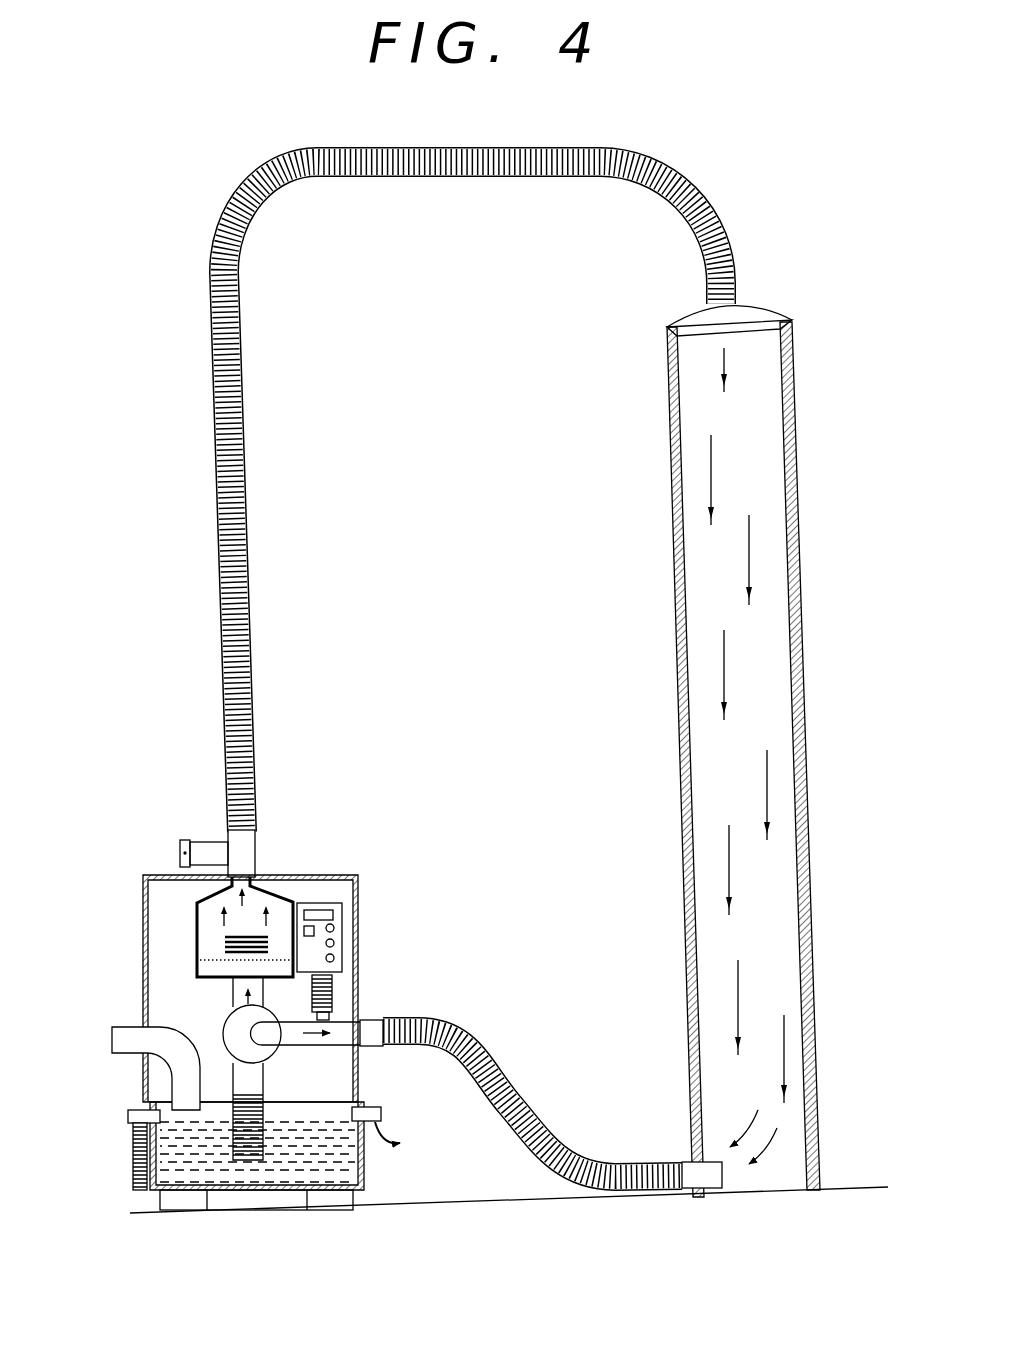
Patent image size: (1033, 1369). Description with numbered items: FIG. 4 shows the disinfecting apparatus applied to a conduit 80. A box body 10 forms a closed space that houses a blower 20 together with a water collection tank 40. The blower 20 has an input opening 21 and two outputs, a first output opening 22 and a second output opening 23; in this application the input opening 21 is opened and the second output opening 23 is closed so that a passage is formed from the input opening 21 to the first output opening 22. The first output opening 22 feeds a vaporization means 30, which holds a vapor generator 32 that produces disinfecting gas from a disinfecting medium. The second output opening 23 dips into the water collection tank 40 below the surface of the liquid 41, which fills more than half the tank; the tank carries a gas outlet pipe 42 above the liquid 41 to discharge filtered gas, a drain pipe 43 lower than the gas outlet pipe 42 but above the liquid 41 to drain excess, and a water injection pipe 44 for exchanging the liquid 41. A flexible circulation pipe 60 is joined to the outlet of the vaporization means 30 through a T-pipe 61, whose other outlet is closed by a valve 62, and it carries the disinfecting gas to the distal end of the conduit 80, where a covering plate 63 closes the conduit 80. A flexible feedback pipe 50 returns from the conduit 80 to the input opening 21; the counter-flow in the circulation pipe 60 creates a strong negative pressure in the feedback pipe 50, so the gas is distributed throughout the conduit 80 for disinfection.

The box body 10 is at (145, 905).
The blower 20 is at (236, 1030).
The input opening 21 is at (287, 1033).
The first output opening 22 is at (233, 992).
The second output opening 23 is at (253, 1075).
The vaporization means 30 is at (190, 886).
The vapor generator 32 is at (226, 946).
The water collection tank 40 is at (122, 1196).
The liquid 41 is at (137, 1160).
The gas outlet pipe 42 is at (190, 1085).
The drain pipe 43 is at (129, 1130).
The water injection pipe 44 is at (403, 1125).
The feedback pipe 50 is at (487, 1050).
The circulation pipe 60 is at (222, 648).
The T-pipe 61 is at (220, 838).
The valve 62 is at (186, 840).
The covering plate 63 is at (703, 313).
The conduit 80 is at (666, 725).